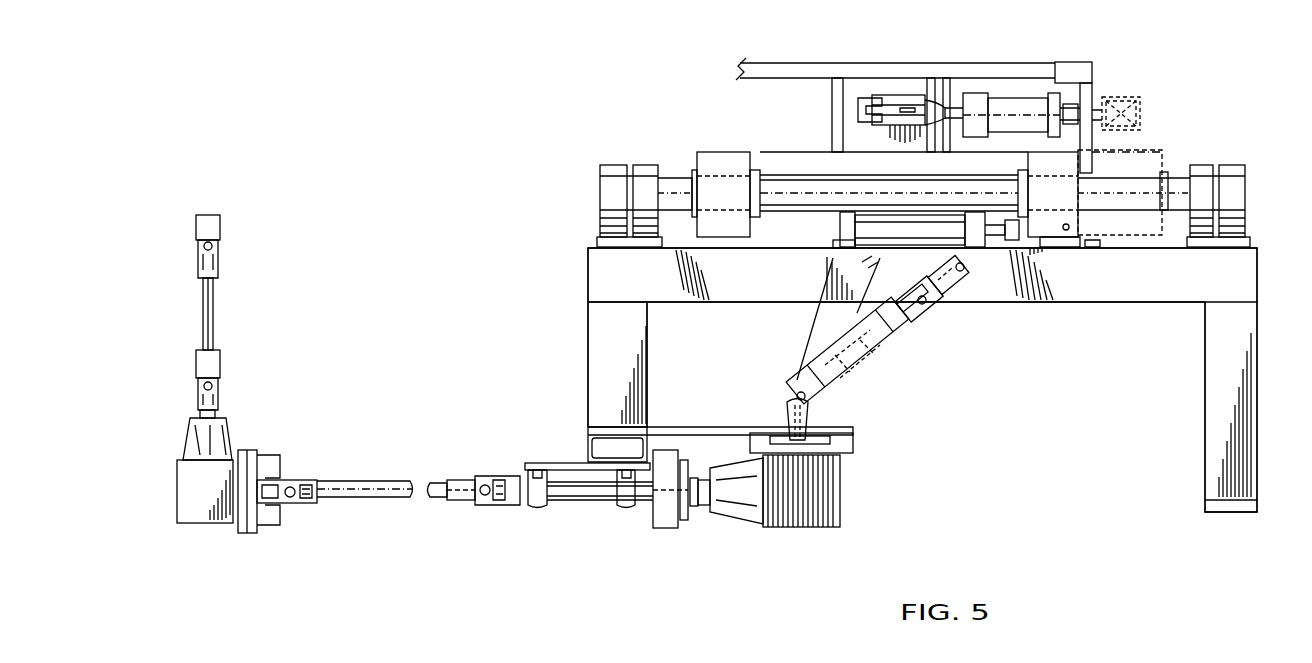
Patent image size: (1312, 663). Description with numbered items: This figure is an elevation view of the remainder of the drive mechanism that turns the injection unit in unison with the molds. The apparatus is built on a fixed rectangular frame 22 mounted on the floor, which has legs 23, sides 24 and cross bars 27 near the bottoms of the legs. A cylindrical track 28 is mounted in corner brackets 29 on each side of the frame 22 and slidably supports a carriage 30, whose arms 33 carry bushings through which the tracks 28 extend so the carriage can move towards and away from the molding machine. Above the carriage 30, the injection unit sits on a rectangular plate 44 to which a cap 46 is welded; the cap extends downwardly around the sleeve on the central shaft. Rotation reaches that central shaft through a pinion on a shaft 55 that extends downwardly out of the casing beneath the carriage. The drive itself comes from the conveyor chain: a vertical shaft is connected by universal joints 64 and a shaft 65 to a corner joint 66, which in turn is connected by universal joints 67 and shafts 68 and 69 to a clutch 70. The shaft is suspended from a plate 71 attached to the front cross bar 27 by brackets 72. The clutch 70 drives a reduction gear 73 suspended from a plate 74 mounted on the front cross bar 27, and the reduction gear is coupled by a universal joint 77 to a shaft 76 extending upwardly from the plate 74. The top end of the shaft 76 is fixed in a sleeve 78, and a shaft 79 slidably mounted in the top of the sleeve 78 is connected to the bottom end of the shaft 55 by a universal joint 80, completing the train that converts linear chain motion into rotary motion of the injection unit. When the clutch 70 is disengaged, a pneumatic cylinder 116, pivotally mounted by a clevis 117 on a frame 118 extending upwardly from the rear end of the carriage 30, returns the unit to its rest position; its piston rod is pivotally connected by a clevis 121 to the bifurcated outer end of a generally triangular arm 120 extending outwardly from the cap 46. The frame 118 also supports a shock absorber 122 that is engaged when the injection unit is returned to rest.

The fixed rectangular frame 22 is at (906, 380).
The legs 23 is at (590, 373).
The sides 24 is at (1112, 302).
The cross bars 27 is at (590, 450).
The cylindrical track 28 is at (678, 185).
The corner brackets 29 is at (600, 190).
The carriage 30 is at (805, 160).
The arms 33 is at (733, 162).
The rectangular plate 44 is at (962, 72).
The cap 46 is at (833, 118).
The shaft 55 is at (965, 275).
The universal joints 64 is at (218, 254).
The shaft 65 is at (214, 316).
The corner joint 66 is at (195, 524).
The universal joints 67 is at (500, 482).
The shaft 68 is at (360, 482).
The shaft 69 is at (565, 498).
The clutch 70 is at (667, 530).
The plate 71 is at (546, 465).
The brackets 72 is at (537, 506).
The reduction gear 73 is at (835, 500).
The plate 74 is at (690, 434).
The shaft 76 is at (835, 396).
The universal joint 77 is at (788, 420).
The sleeve 78 is at (882, 350).
The shaft 79 is at (906, 322).
The universal joint 80 is at (938, 307).
The pneumatic cylinder 116 is at (1010, 100).
The clevis 117 is at (1078, 105).
The frame 118 is at (1085, 64).
The triangular arm 120 is at (862, 104).
The clevis 121 is at (880, 100).
The shock absorber 122 is at (1135, 94).